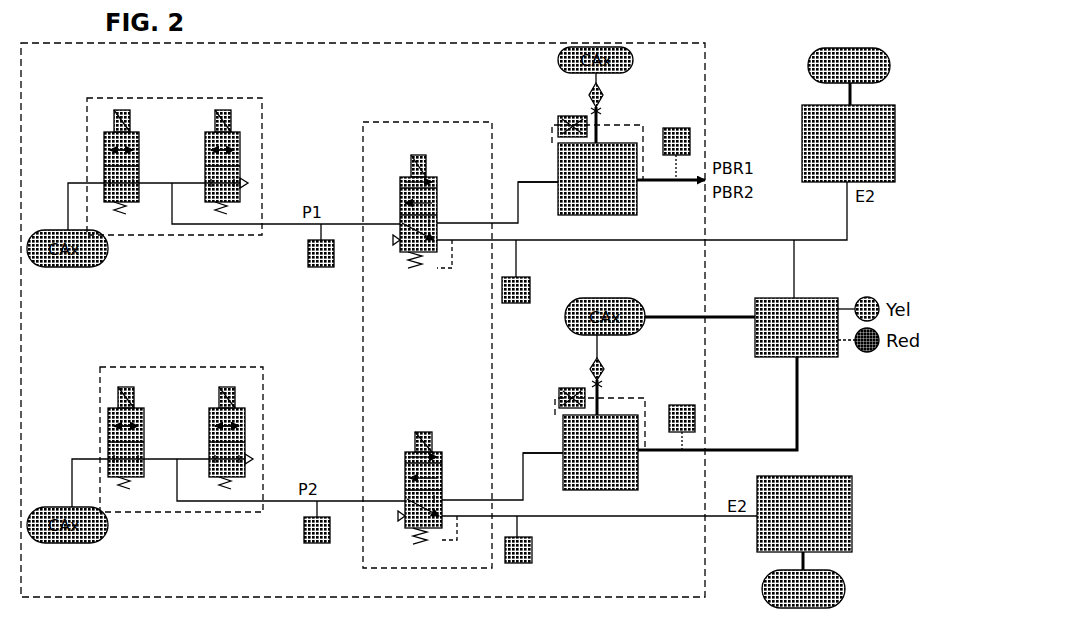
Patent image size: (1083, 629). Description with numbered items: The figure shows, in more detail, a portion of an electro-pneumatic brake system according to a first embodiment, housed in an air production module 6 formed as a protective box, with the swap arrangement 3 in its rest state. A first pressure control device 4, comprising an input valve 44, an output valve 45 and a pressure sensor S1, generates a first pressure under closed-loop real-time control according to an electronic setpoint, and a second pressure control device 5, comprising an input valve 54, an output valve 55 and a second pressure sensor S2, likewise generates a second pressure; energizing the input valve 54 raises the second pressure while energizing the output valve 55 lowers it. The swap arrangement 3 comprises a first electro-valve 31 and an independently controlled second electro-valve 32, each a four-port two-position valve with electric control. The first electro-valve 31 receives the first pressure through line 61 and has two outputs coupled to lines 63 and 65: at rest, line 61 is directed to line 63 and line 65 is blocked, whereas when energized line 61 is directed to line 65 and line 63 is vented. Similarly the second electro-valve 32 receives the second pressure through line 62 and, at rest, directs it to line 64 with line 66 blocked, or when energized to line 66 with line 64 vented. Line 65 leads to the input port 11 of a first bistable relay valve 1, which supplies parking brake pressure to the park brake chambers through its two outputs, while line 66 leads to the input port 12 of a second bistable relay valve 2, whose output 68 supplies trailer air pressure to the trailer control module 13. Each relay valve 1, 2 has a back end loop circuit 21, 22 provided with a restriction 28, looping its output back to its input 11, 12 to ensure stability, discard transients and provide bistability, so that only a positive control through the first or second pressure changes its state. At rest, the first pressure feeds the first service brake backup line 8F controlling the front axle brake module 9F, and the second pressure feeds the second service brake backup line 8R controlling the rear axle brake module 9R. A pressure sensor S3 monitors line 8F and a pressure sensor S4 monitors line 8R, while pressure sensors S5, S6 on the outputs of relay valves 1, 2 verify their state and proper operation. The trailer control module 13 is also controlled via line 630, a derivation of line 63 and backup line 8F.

The air production module 6 is at (423, 41).
The first pressure control device 4 is at (181, 96).
The input valve 44 is at (102, 143).
The output valve 45 is at (247, 140).
The line 61 is at (205, 236).
The second pressure control device 5 is at (184, 365).
The input valve 54 is at (106, 403).
The output valve 55 is at (250, 403).
The line 62 is at (200, 513).
The swap arrangement 3 is at (361, 353).
The first electro-valve 31 is at (440, 176).
The second electro-valve 32 is at (443, 440).
The line 65 is at (497, 206).
The line 63 is at (476, 253).
The line 66 is at (502, 477).
The line 64 is at (479, 526).
The first bistable relay valve 1 is at (640, 208).
The input port 11 is at (558, 176).
The back end loop circuit 21 is at (597, 126).
The restriction 28 is at (566, 115).
The second bistable relay valve 2 is at (642, 479).
The input port 12 is at (563, 447).
The back end loop circuit 22 is at (600, 392).
The trailer control module 13 is at (812, 294).
The line 630 is at (794, 283).
The output of the second bistable relay valve 68 is at (800, 400).
The front axle brake module 9F is at (800, 103).
The rear axle brake module 9R is at (857, 485).
The first service brake backup line 8F is at (633, 241).
The second service brake backup line 8R is at (615, 517).
The pressure sensor S1 is at (307, 256).
The second pressure sensor S2 is at (305, 531).
The pressure sensor S3 is at (530, 286).
The pressure sensor S4 is at (532, 556).
The pressure sensor S5 is at (680, 128).
The pressure sensor S6 is at (682, 405).